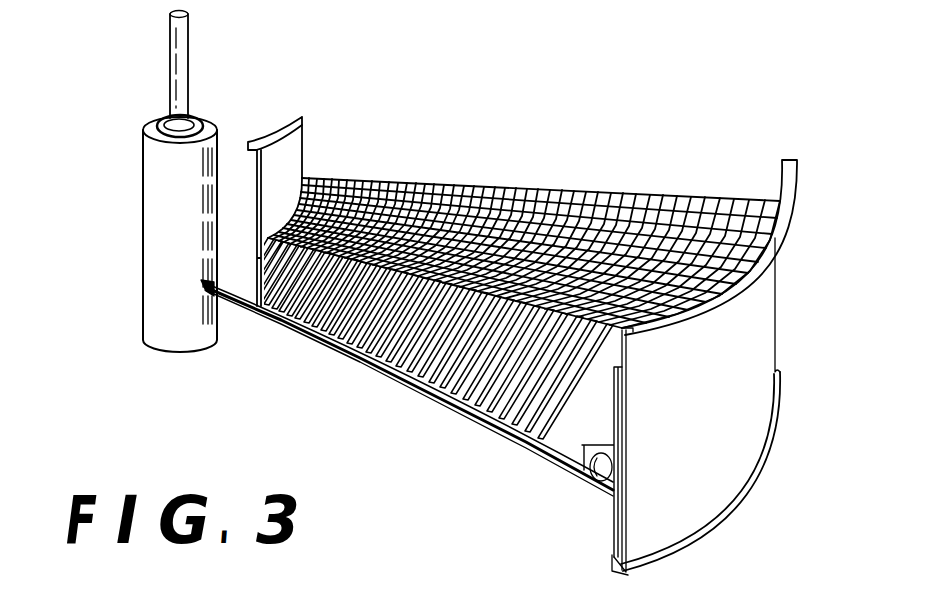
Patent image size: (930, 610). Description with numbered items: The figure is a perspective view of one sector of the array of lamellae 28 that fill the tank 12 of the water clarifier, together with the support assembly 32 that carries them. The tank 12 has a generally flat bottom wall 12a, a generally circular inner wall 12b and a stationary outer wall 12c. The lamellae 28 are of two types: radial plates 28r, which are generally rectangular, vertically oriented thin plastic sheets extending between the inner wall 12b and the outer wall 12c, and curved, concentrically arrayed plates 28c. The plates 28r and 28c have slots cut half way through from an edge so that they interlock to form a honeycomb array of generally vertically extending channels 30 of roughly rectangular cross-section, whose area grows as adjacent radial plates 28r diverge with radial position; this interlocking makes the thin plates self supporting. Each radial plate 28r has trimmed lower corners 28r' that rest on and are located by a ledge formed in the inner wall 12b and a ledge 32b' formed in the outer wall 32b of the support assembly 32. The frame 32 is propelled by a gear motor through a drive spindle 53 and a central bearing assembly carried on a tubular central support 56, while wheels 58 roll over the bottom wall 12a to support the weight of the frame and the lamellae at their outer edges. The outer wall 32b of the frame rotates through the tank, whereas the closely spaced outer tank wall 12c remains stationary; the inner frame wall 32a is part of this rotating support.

The tank 12 is at (512, 331).
The bottom wall 12a is at (407, 388).
The inner wall 12b is at (340, 197).
The outer wall 12c is at (717, 367).
The lamellae 28 is at (426, 224).
The radial plates 28r is at (426, 234).
The trimmed lower corners 28r' is at (197, 244).
The curved plates 28c is at (424, 372).
The channels 30 is at (526, 234).
The support assembly 32 is at (407, 388).
The inner frame member 32a is at (340, 197).
The outer wall 32b is at (641, 462).
The ledge 32b' is at (559, 501).
The drive spindle 53 is at (212, 65).
The tubular central support 56 is at (143, 233).
The wheels 58 is at (584, 502).